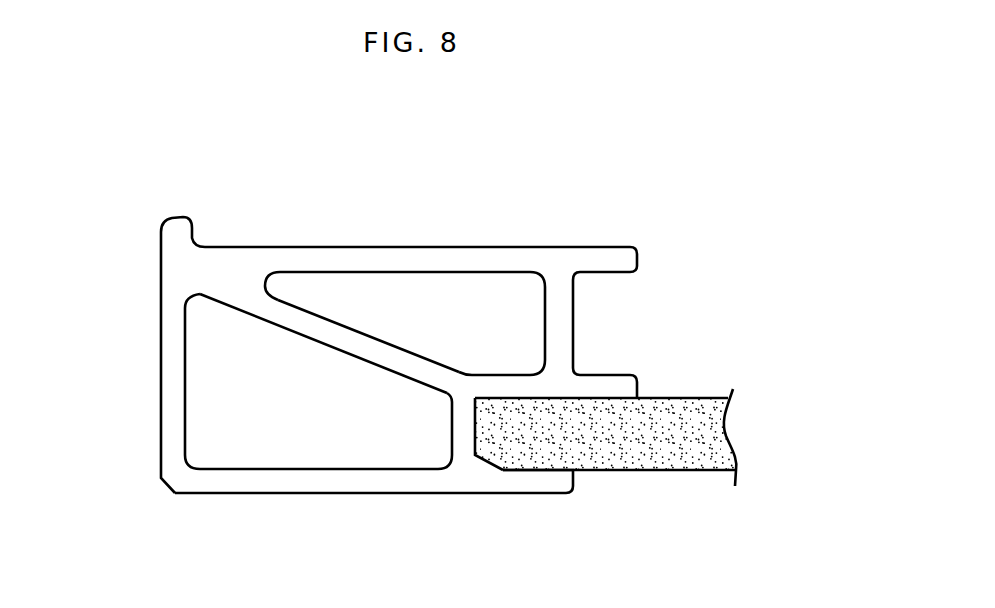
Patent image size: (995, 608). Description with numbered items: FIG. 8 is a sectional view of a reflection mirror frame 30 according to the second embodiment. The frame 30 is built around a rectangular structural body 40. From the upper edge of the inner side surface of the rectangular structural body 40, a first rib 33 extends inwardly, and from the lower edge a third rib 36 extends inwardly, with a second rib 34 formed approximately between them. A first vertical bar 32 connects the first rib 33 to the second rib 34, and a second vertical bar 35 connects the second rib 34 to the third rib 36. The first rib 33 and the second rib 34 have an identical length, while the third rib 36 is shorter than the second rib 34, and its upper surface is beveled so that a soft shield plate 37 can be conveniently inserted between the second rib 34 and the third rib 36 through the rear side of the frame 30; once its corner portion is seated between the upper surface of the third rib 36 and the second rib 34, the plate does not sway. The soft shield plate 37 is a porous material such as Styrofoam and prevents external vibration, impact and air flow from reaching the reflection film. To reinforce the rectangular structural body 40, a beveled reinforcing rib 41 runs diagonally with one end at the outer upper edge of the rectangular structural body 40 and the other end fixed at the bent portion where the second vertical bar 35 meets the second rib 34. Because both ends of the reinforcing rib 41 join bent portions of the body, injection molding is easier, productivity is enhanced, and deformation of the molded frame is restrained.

The frame 30 is at (778, 440).
The first vertical bar 32 is at (562, 323).
The first rib 33 is at (626, 260).
The second rib 34 is at (627, 385).
The second vertical bar 35 is at (463, 428).
The third rib 36 is at (557, 480).
The soft shield plate 37 is at (678, 455).
The rectangular structural body 40 is at (175, 370).
The reinforcing rib 41 is at (318, 331).